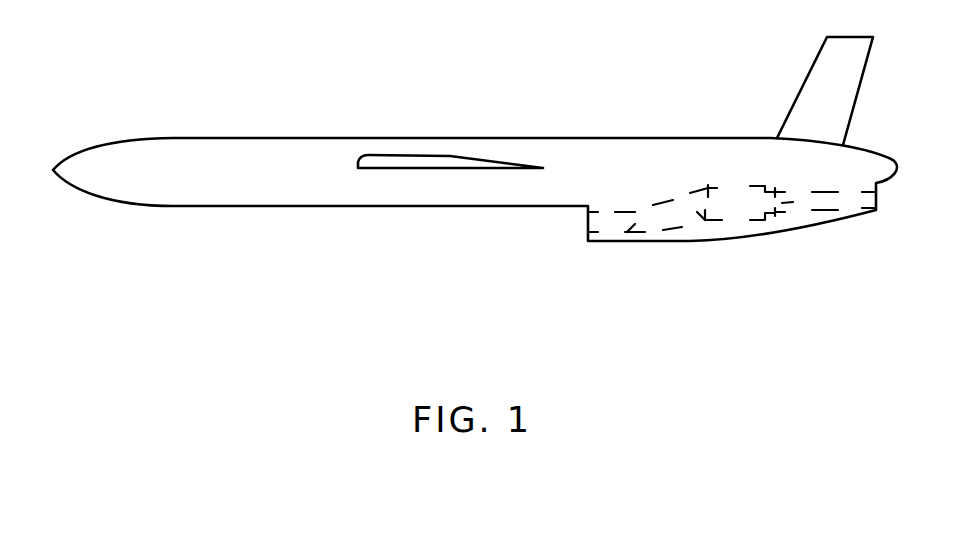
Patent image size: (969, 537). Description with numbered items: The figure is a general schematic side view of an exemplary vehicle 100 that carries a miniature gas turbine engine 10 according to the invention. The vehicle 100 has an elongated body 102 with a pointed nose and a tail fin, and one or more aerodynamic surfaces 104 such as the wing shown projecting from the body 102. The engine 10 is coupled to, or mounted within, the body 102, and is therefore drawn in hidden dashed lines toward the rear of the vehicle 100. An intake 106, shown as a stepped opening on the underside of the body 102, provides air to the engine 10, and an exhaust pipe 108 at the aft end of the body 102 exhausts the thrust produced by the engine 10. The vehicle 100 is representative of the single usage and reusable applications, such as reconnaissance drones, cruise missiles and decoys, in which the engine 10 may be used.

The vehicle 100 is at (478, 82).
The body 102 is at (240, 138).
The aerodynamic surface 104 is at (398, 168).
The miniature gas turbine engine 10 is at (717, 187).
The intake 106 is at (614, 247).
The exhaust pipe 108 is at (810, 212).